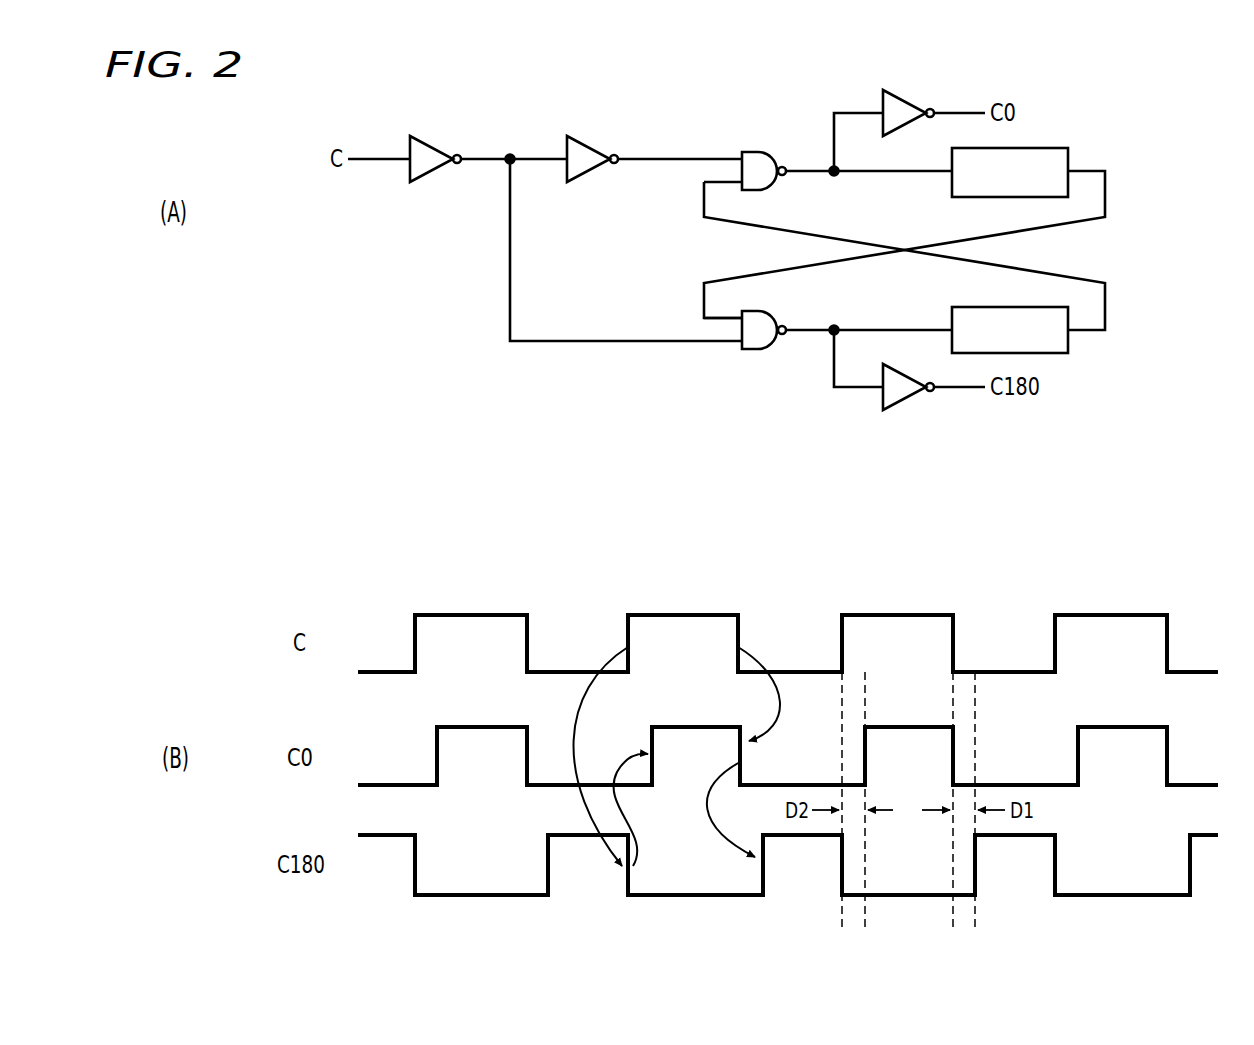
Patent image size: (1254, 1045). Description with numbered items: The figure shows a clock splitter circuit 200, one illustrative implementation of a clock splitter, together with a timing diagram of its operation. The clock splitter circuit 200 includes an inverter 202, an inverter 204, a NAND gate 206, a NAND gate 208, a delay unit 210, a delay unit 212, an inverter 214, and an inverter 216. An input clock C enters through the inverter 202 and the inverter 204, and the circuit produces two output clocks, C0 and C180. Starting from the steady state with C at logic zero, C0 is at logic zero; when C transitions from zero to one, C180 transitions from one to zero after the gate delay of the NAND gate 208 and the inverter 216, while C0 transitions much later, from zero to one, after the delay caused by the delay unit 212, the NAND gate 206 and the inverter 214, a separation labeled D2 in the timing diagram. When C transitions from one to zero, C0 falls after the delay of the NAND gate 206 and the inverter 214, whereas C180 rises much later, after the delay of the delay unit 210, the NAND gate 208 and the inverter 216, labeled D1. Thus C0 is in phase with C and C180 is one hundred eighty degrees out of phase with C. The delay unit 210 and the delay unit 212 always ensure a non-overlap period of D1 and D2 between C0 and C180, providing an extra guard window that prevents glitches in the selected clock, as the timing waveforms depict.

The clock splitter circuit 200 is at (1166, 87).
The inverter 202 is at (431, 143).
The inverter 204 is at (588, 143).
The NAND gate 206 is at (751, 152).
The NAND gate 208 is at (751, 349).
The delay unit 210 is at (1050, 148).
The delay unit 212 is at (1057, 353).
The inverter 214 is at (905, 97).
The inverter 216 is at (881, 400).